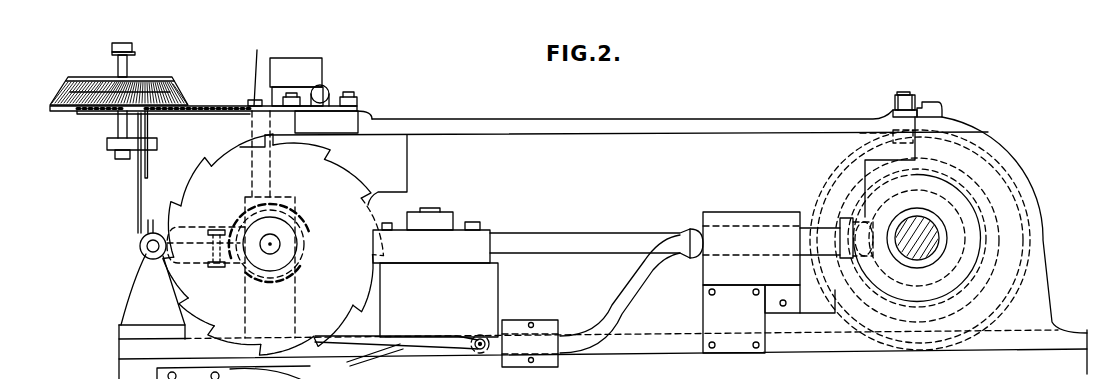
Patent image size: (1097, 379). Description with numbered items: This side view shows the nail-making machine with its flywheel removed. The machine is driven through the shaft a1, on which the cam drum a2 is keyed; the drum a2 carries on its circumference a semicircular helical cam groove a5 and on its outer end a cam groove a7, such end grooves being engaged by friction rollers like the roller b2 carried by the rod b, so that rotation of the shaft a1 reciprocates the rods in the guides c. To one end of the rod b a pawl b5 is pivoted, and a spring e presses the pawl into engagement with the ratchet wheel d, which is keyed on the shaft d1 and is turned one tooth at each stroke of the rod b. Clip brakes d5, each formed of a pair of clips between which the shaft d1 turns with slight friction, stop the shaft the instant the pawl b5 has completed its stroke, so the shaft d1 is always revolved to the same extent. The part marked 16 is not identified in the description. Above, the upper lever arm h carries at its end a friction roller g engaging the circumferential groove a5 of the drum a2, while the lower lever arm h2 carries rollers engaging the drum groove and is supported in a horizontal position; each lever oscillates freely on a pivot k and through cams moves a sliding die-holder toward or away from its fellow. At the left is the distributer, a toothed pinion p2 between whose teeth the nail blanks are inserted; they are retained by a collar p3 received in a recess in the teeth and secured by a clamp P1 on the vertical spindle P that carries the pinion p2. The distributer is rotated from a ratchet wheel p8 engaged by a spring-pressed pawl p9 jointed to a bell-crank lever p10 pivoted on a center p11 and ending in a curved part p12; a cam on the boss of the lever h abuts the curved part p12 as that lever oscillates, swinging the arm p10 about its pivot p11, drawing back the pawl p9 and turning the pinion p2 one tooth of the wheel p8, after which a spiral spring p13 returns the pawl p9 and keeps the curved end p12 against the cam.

The vertical spindle P is at (120, 60).
The clamp P1 is at (122, 66).
The toothed pinion p2 is at (168, 77).
The collar p3 is at (136, 78).
The ratchet wheel p8 is at (96, 114).
The spring pressed pawl p9 is at (132, 116).
The bell crank lever p10 is at (214, 105).
The center p11 is at (256, 115).
The curved part p12 is at (330, 108).
The spiral spring p13 is at (187, 112).
The pivot k is at (325, 100).
The lever arm h is at (704, 127).
The lever arm h2 is at (557, 246).
The ratchet wheel d is at (273, 244).
The shaft d1 is at (275, 246).
The clip brakes d5 is at (279, 210).
The rod b is at (600, 296).
The friction roller b2 is at (868, 252).
The pawl b5 is at (363, 345).
The spring e is at (516, 360).
The pivot pin 16 is at (476, 350).
The guides c is at (740, 214).
The friction rollers g is at (893, 137).
The shaft a1 is at (928, 250).
The cam drum a2 is at (948, 226).
The helical cam groove a5 is at (913, 141).
The cam groove a7 is at (950, 302).